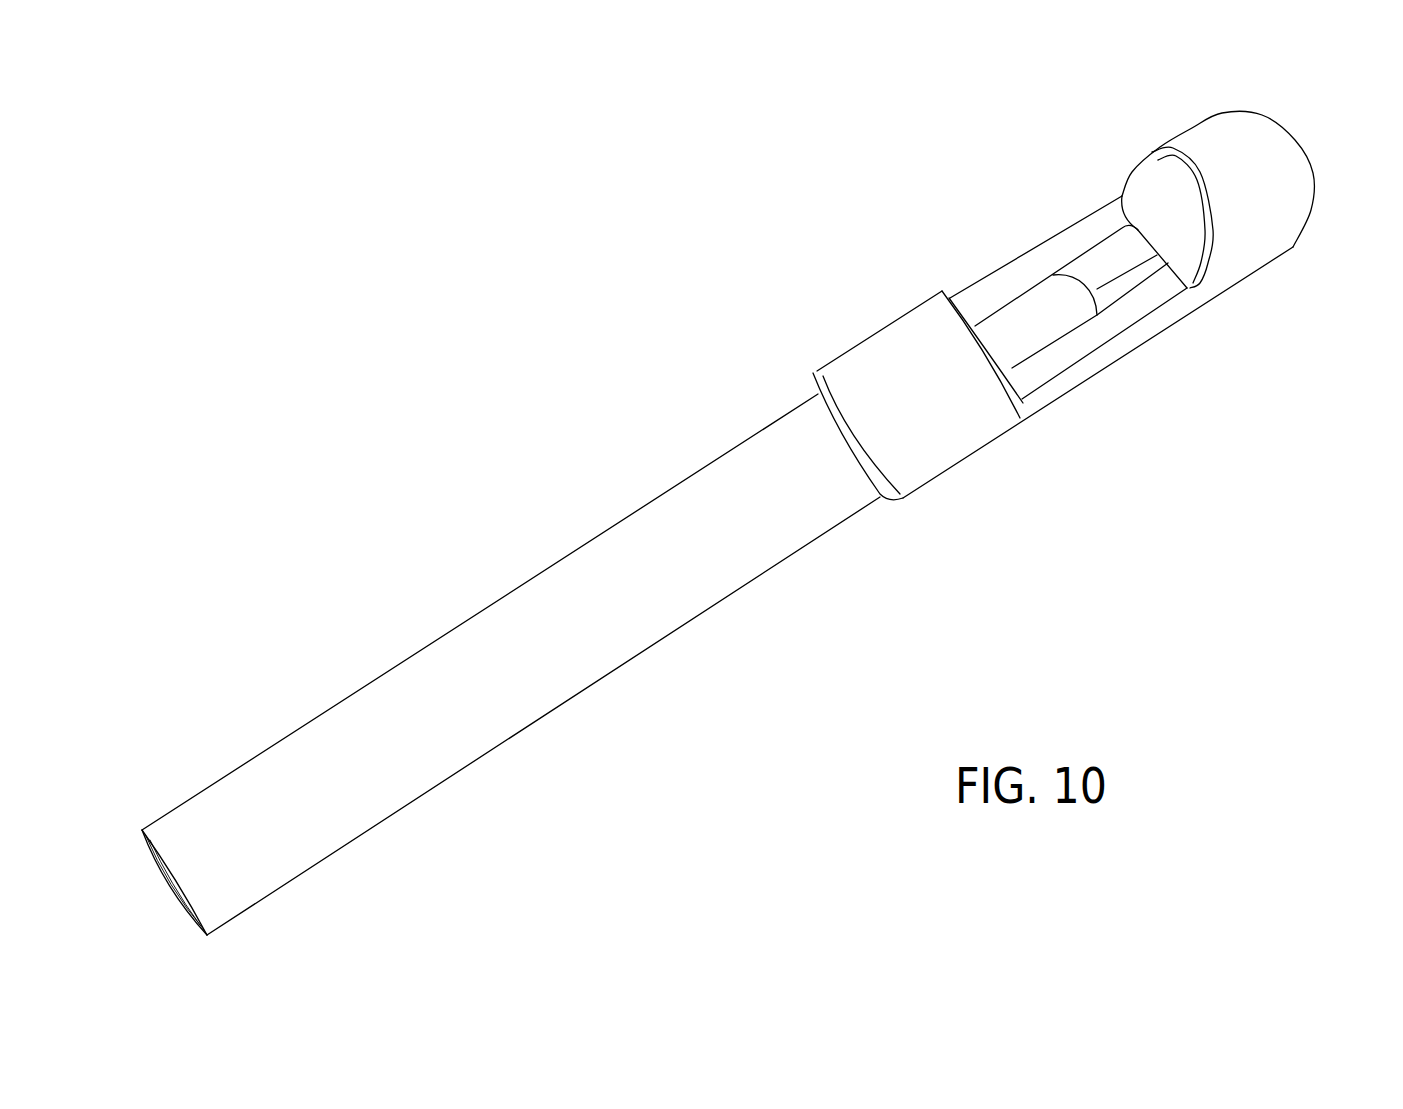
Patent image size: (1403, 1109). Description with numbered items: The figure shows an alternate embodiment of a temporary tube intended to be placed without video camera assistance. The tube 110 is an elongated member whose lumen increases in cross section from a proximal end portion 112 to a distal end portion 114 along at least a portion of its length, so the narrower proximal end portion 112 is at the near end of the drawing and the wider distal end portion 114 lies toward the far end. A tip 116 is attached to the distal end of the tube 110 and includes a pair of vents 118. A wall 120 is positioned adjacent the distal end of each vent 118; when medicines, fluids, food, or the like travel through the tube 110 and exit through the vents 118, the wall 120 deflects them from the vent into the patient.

The tube 110 is at (398, 792).
The proximal end portion 112 is at (213, 780).
The distal end portion 114 is at (731, 444).
The tip 116 is at (1284, 252).
The vents 118 is at (1101, 258).
The wall 120 is at (1157, 195).